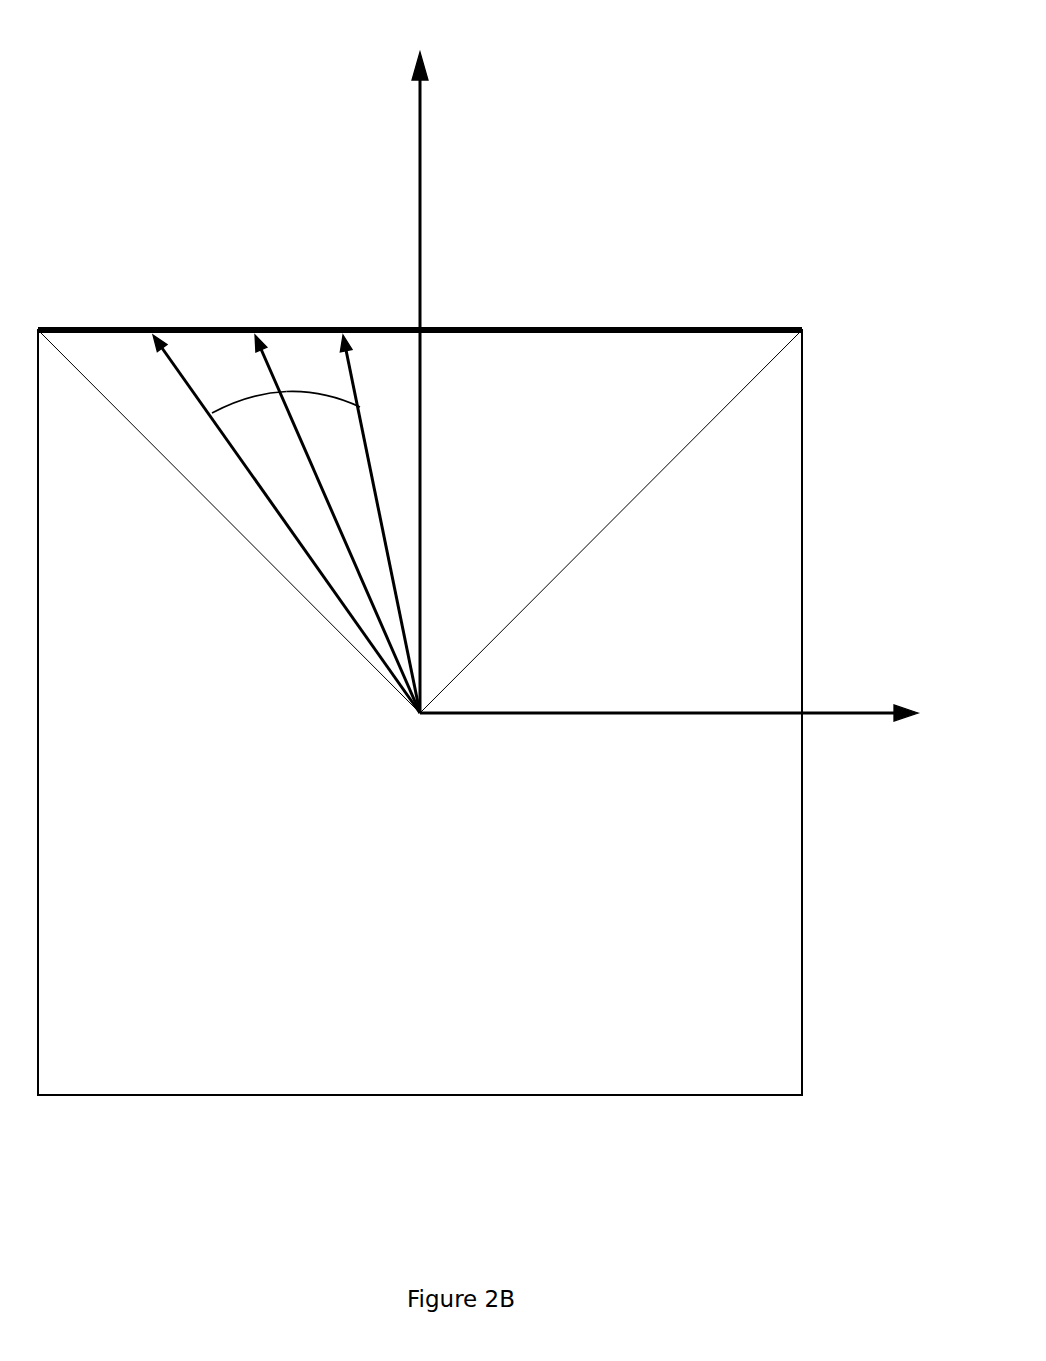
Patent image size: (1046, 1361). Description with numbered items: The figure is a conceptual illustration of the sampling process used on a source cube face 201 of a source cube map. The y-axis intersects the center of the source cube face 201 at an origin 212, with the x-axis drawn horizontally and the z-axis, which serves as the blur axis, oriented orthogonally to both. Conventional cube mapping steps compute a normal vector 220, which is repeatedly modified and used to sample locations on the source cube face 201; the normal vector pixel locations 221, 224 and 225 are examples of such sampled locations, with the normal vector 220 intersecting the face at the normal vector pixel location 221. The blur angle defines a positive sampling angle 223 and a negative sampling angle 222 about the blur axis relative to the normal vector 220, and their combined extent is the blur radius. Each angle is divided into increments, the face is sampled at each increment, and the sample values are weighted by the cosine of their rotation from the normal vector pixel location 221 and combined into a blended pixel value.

The source cube face 201 is at (698, 328).
The origin 212 is at (421, 714).
The normal vector 220 is at (262, 364).
The normal vector pixel location 221 is at (250, 328).
The negative sampling angle 222 is at (250, 397).
The positive sampling angle 223 is at (317, 397).
The normal vector pixel location 224 is at (342, 328).
The normal vector pixel location 225 is at (153, 328).